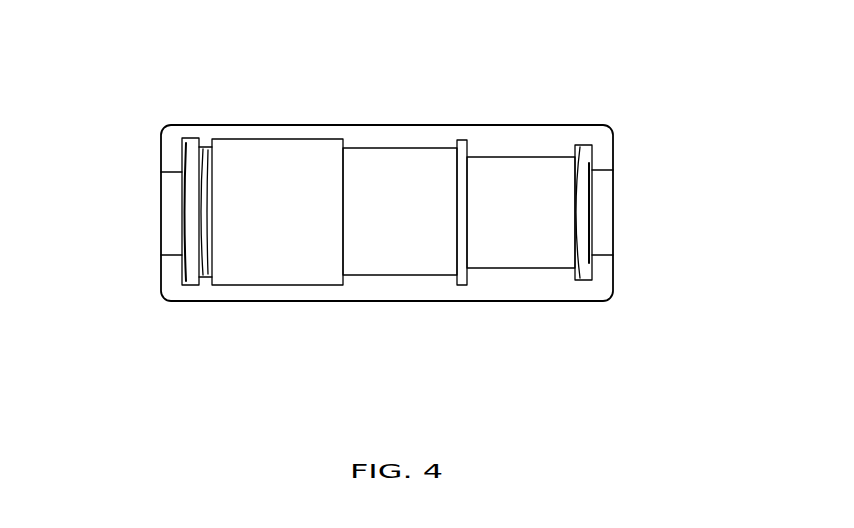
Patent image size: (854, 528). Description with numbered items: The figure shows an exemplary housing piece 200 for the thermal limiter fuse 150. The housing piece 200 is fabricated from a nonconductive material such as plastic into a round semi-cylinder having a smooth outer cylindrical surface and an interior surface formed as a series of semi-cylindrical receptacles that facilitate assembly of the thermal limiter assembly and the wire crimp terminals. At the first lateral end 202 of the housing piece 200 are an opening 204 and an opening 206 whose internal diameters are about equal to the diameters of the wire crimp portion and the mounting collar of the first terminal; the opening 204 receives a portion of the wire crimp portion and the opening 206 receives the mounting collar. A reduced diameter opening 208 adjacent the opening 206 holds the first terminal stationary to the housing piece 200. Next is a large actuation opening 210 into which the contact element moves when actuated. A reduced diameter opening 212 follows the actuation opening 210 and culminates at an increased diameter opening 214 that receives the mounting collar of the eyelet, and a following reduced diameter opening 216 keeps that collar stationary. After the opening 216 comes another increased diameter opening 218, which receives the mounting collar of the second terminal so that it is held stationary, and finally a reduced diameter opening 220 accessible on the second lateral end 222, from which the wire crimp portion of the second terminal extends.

The thermal limiter fuse 150 is at (532, 85).
The housing piece 200 is at (275, 124).
The first lateral end 202 is at (160, 150).
The opening 204 is at (172, 237).
The opening 206 is at (192, 202).
The reduced diameter opening 208 is at (207, 260).
The actuation opening 210 is at (287, 260).
The reduced diameter opening 212 is at (385, 262).
The increased diameter opening 214 is at (465, 272).
The reduced diameter opening 216 is at (513, 243).
The increased diameter opening 218 is at (592, 272).
The reduced diameter opening 220 is at (598, 218).
The second lateral end 222 is at (613, 153).